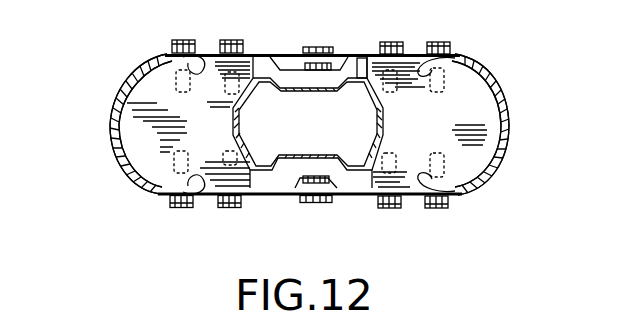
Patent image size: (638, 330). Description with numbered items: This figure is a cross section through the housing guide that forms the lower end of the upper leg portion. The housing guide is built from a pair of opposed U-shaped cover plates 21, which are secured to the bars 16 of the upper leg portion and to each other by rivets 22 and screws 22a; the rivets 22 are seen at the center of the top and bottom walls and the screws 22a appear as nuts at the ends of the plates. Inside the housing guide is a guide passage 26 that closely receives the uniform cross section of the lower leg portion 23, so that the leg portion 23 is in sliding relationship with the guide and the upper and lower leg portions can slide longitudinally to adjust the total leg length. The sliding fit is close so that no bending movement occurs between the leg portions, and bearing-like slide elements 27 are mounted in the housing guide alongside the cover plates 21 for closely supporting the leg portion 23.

The bars 16 is at (128, 88).
The U-shaped cover plates 21 is at (133, 172).
The rivets 22 is at (322, 48).
The screws 22a is at (231, 40).
The leg portion 23 is at (262, 76).
The guide passage 26 is at (358, 75).
The bearing-like slide elements 27 is at (140, 143).